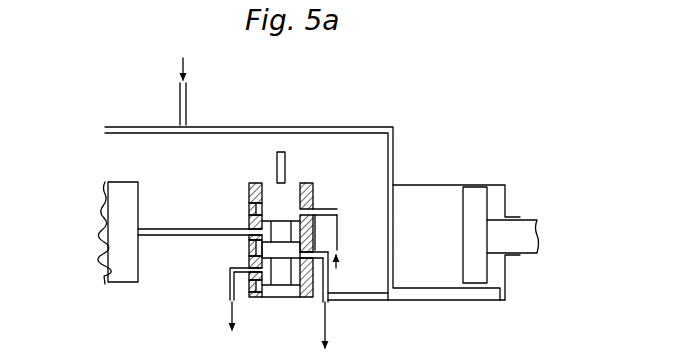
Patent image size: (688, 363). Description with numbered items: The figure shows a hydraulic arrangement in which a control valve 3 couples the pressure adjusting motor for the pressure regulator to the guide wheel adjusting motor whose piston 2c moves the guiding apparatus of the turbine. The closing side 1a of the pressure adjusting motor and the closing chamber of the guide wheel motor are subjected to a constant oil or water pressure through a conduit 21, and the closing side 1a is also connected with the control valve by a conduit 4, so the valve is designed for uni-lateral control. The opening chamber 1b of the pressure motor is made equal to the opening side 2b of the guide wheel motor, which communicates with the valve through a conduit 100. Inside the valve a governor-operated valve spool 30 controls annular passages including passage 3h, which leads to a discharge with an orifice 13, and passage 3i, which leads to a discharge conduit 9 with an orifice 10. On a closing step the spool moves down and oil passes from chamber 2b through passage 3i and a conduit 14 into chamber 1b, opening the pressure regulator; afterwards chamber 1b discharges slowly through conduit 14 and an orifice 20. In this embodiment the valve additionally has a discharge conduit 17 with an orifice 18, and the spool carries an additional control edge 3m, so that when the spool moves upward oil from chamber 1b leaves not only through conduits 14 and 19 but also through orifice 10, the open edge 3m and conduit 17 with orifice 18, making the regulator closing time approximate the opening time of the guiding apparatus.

The closing side of pressure adjusting motor 1a is at (420, 197).
The opening chamber of pressure adjusting motor 1b is at (493, 199).
The opening side of guide wheel adjusting motor 2b is at (120, 272).
The piston of guide wheel adjusting motor 2c is at (104, 270).
The hydraulic control valve 3 is at (256, 183).
The annular passage 3h is at (249, 203).
The annular passage 3i is at (249, 242).
The additional control edge 3m is at (268, 287).
The conduit 4 is at (337, 216).
The discharge conduit 9 is at (325, 240).
The orifice 10 is at (325, 263).
The orifice 13 is at (325, 215).
The conduit 14 is at (396, 300).
The additional discharge conduit 17 is at (229, 274).
The orifice 18 is at (230, 290).
The conduit 19 is at (328, 305).
The orifice 20 is at (323, 308).
The conduit 21 is at (187, 92).
The valve spool 30 is at (289, 190).
The conduit 100 is at (159, 214).